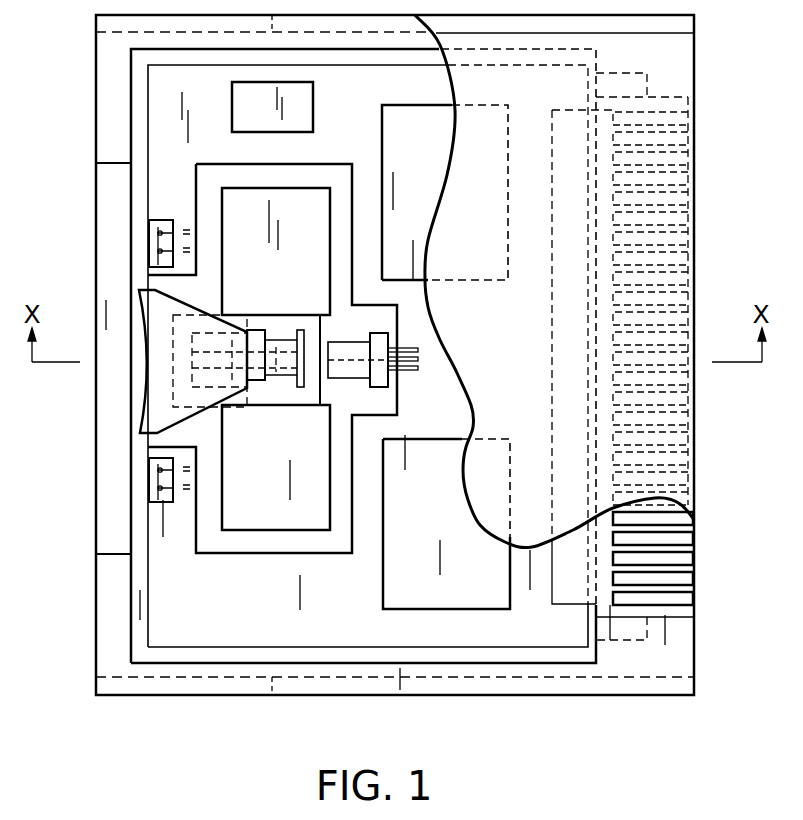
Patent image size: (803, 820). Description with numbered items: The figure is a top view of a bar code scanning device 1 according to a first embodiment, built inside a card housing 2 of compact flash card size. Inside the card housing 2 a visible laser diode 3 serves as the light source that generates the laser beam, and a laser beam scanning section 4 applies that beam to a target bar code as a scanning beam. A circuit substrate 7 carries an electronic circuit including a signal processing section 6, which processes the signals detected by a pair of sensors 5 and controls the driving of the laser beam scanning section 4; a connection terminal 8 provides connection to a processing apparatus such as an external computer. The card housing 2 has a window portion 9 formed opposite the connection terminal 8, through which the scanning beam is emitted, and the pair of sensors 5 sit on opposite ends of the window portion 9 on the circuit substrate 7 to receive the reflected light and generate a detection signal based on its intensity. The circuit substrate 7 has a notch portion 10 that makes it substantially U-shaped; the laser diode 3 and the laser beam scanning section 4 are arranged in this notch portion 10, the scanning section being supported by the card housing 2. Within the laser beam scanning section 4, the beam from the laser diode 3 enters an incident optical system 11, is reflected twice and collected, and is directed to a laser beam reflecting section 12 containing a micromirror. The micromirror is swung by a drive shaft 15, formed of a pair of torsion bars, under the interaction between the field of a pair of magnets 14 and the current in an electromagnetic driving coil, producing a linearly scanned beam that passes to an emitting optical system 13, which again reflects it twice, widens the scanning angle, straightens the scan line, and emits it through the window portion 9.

The bar code scanning device 1 is at (226, 700).
The card housing 2 is at (652, 667).
The visible laser diode 3 is at (350, 348).
The laser beam scanning section 4 is at (198, 423).
The sensors 5 is at (150, 243).
The signal processing section 6 is at (392, 118).
The circuit substrate 7 is at (155, 113).
The connection terminal 8 is at (683, 578).
The window portion 9 is at (108, 521).
The notch portion 10 is at (323, 553).
The incident optical system 11 is at (283, 373).
The laser beam reflecting section 12 is at (243, 348).
The emitting optical system 13 is at (223, 393).
The magnets 14 is at (237, 215).
The drive shaft 15 is at (283, 348).